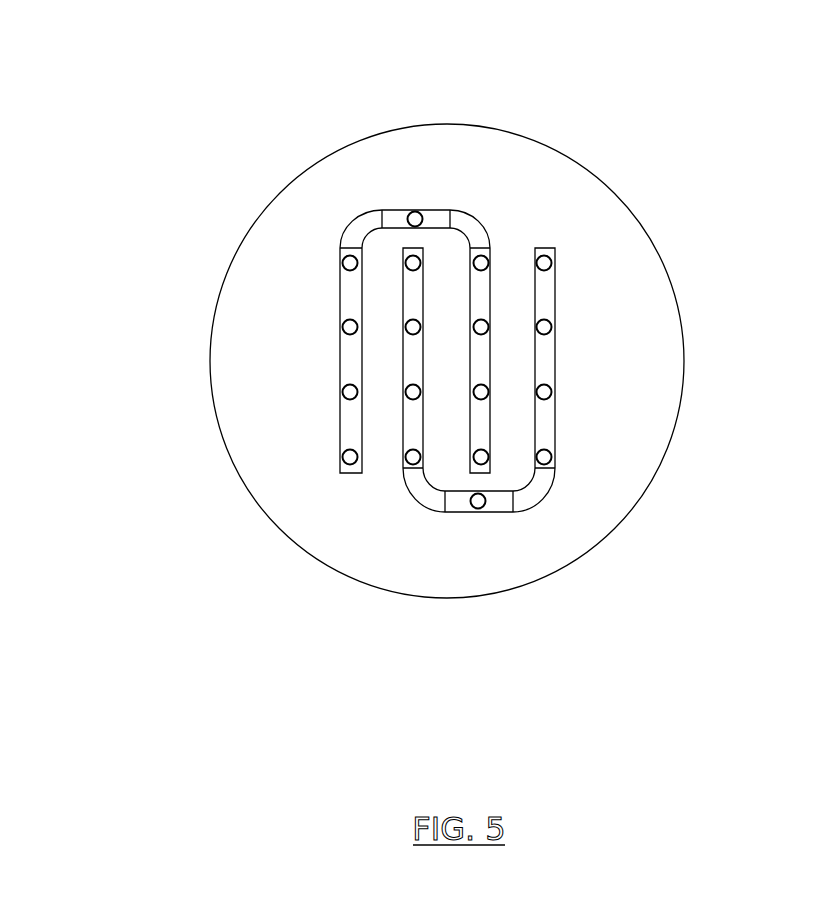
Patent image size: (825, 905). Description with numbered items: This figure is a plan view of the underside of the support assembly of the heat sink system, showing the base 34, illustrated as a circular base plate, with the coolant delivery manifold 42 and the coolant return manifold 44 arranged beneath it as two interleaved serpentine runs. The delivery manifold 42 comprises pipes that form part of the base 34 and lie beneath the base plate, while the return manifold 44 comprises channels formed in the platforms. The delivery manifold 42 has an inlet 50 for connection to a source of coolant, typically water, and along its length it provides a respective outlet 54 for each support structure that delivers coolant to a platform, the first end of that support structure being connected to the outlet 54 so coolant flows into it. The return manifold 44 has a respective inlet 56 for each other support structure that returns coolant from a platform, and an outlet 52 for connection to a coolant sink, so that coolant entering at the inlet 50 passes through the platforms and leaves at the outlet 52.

The base 34 is at (613, 228).
The coolant delivery manifold 42 is at (340, 245).
The coolant return manifold 44 is at (553, 290).
The inlet 50 is at (417, 211).
The outlet 52 is at (479, 509).
The outlet 54 is at (487, 325).
The inlet 56 is at (404, 393).